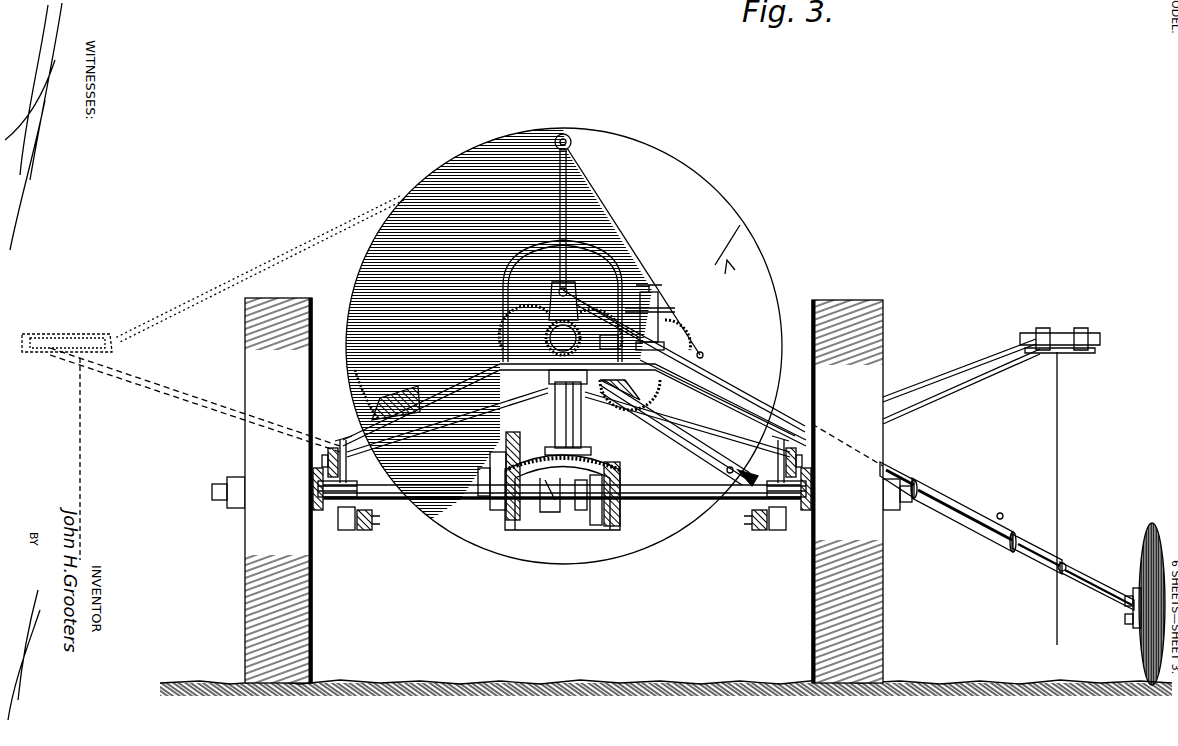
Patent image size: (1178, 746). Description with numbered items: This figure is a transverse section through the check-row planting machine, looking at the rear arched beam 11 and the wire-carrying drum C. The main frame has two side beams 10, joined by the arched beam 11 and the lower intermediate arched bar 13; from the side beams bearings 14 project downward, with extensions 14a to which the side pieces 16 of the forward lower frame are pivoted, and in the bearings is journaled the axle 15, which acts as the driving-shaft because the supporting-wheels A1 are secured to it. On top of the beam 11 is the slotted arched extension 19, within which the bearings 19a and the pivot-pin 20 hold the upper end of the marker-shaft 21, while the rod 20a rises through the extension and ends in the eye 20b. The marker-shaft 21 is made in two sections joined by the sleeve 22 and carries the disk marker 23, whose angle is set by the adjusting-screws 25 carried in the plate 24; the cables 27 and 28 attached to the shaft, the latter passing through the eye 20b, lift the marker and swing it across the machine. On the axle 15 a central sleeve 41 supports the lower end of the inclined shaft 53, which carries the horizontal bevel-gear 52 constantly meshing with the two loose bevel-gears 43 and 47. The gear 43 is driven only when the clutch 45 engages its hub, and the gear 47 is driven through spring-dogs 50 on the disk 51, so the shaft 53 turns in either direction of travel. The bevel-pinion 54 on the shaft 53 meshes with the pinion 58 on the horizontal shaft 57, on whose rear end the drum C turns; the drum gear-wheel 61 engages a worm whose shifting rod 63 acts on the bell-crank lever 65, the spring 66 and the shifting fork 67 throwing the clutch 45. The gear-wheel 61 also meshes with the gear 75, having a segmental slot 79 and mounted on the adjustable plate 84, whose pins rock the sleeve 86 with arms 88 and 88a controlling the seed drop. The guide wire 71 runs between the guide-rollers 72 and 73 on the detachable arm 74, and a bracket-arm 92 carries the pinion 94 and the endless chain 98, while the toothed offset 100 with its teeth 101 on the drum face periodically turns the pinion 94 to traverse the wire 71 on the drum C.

The drum C is at (561, 346).
The supporting-wheels A1 is at (564, 490).
The side beams 10 is at (347, 466).
The rear arched beam 11 is at (490, 366).
The intermediate arched bar 13 is at (483, 396).
The bearings 14 is at (336, 512).
The bearing extensions 14a is at (348, 532).
The axle 15 is at (470, 490).
The side pieces of forward lower frame 16 is at (380, 514).
The arched extension 19 is at (503, 283).
The bearings 19a is at (580, 298).
The pivot-pin 20 is at (557, 285).
The rod 20a is at (549, 212).
The eye 20b is at (575, 150).
The marker-shaft 21 is at (898, 466).
The sleeve 22 is at (982, 508).
The disk marker 23 is at (1138, 650).
The plate 24 is at (1134, 588).
The adjusting-screws 25 is at (1125, 606).
The rope, chain, or cable 27 is at (792, 428).
The rope, chain, or cable 28 is at (690, 340).
The sleeve 41 is at (580, 510).
The bevel-gear 43 is at (622, 516).
The clutch 45 is at (585, 528).
The bevel-gear 47 is at (508, 505).
The spring-dogs 50 is at (488, 496).
The collar or disk 51 is at (496, 470).
The bevel-gear 52 is at (521, 445).
The shaft 53 is at (568, 408).
The bevel-pinion 54 is at (610, 340).
The horizontal shaft 57 is at (540, 362).
The bevel-pinion 58 is at (552, 350).
The gear-wheel 61 is at (548, 323).
The shifting rod 63 is at (548, 405).
The bell-crank lever 65 is at (548, 512).
The spring 66 is at (594, 526).
The shifting fork 67 is at (612, 462).
The guide wire 71 is at (258, 268).
The guide-roller 72 is at (1110, 338).
The guide-roller 73 is at (103, 336).
The arm 74 is at (214, 385).
The gear 75 is at (638, 395).
The segmental slot 79 is at (660, 332).
The horizontal plate 84 is at (620, 397).
The sleeve 86 is at (652, 296).
The horizontal arm 88 is at (660, 312).
The horizontal arm 88a is at (605, 317).
The bracket-arm 92 is at (696, 452).
The pinion 94 is at (740, 464).
The endless chain 98 is at (712, 500).
The offset 100 is at (396, 390).
The teeth 101 is at (355, 372).